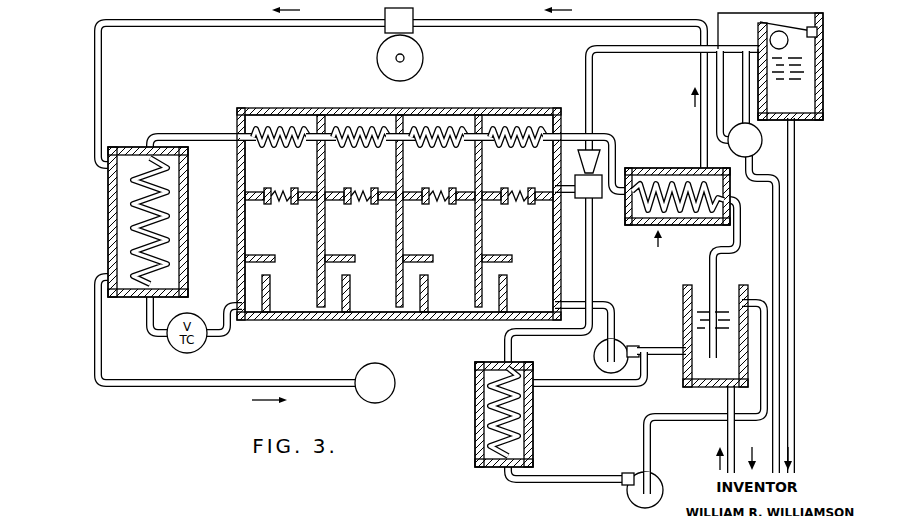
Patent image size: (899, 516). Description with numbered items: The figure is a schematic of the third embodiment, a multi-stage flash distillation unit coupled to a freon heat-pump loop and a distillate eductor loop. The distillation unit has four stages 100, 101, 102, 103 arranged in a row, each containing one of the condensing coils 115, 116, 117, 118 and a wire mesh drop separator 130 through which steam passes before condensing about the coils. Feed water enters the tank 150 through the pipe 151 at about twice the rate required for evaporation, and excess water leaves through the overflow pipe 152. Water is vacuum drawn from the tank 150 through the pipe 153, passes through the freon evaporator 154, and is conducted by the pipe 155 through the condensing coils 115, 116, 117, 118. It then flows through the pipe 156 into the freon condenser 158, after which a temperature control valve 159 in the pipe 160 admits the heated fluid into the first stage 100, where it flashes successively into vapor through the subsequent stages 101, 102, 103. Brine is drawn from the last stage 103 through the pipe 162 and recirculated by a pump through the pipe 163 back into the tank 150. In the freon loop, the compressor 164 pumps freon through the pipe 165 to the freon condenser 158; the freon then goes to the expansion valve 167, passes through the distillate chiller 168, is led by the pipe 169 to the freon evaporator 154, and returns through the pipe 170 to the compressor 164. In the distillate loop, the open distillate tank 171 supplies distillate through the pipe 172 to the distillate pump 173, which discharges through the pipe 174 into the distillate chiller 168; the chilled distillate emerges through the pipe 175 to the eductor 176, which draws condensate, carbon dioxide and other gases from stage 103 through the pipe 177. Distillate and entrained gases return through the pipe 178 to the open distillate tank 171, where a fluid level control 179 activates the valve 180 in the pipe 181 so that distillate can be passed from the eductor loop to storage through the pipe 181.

The stage 100 is at (285, 213).
The stage 101 is at (364, 213).
The stage 102 is at (442, 213).
The stage 103 is at (517, 252).
The condensing coil 115 is at (517, 128).
The condensing coil 116 is at (442, 128).
The condensing coil 117 is at (353, 128).
The condensing coil 118 is at (276, 130).
The wire mesh drop separator 130 is at (278, 188).
The tank 150 is at (684, 293).
The pipe 151 is at (727, 441).
The overflow pipe 152 is at (757, 299).
The pipe 153 is at (722, 250).
The freon evaporator 154 is at (669, 167).
The pipe 155 is at (606, 133).
The pipe 156 is at (177, 133).
The freon condenser 158 is at (188, 213).
The temperature control valve 159 is at (208, 350).
The pipe 160 is at (143, 317).
The pipe 162 is at (598, 301).
The pipe 163 is at (673, 355).
The compressor 164 is at (423, 58).
The pipe 165 is at (238, 27).
The expansion valve 167 is at (360, 372).
The distillate chiller 168 is at (476, 427).
The pipe 169 is at (613, 387).
The pipe 170 is at (568, 26).
The open distillate tank 171 is at (800, 121).
The pipe 172 is at (645, 445).
The distillate pump 173 is at (637, 473).
The pipe 174 is at (567, 481).
The pipe 175 is at (500, 348).
The eductor 176 is at (588, 183).
The pipe 177 is at (560, 191).
The pipe 178 is at (657, 51).
The fluid level control 179 is at (768, 33).
The valve 180 is at (762, 147).
The pipe 181 is at (767, 186).